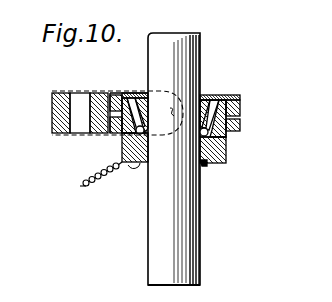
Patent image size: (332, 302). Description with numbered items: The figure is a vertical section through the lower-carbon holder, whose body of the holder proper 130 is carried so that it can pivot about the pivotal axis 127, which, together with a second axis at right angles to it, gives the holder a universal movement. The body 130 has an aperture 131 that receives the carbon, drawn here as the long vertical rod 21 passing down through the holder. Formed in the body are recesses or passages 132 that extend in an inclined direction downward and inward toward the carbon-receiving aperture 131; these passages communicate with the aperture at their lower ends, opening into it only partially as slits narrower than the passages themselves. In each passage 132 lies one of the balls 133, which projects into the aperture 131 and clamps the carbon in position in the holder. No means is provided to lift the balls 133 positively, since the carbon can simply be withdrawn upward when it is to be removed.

The rod 21 is at (174, 159).
The pivotal axis 127 is at (173, 108).
The body of the holder 130 is at (226, 154).
The aperture 131 is at (206, 163).
The recesses or passages 132 is at (240, 104).
The balls 133 is at (226, 139).